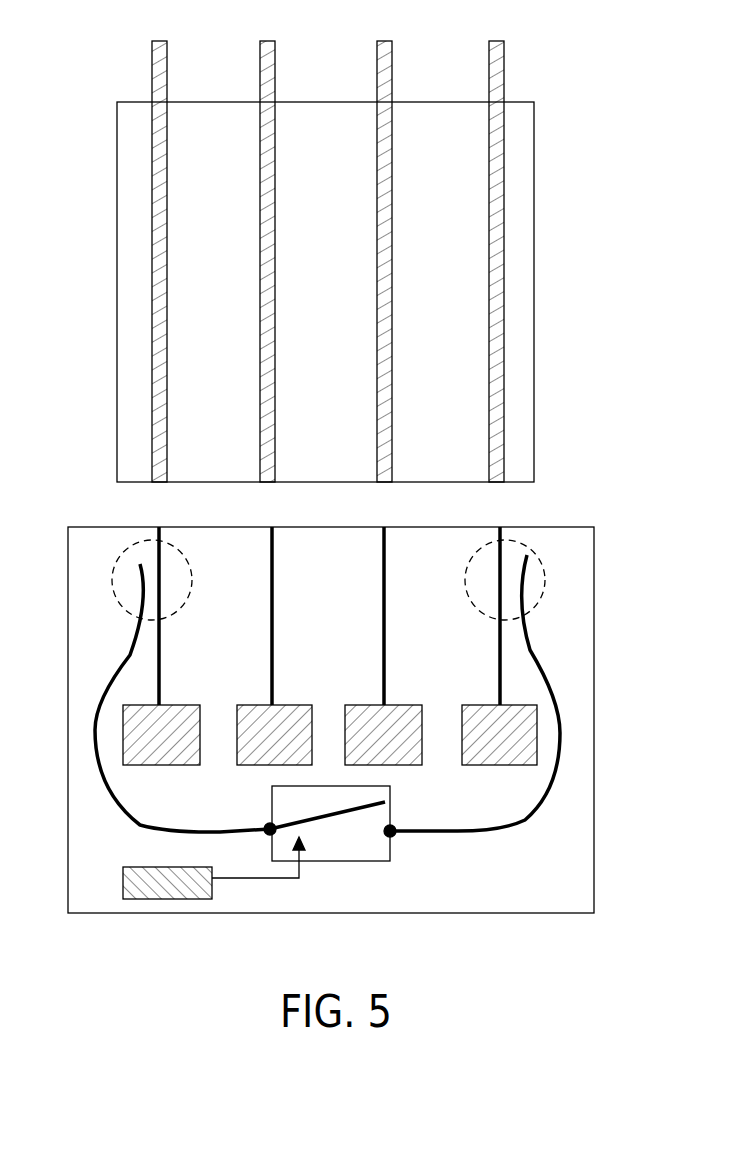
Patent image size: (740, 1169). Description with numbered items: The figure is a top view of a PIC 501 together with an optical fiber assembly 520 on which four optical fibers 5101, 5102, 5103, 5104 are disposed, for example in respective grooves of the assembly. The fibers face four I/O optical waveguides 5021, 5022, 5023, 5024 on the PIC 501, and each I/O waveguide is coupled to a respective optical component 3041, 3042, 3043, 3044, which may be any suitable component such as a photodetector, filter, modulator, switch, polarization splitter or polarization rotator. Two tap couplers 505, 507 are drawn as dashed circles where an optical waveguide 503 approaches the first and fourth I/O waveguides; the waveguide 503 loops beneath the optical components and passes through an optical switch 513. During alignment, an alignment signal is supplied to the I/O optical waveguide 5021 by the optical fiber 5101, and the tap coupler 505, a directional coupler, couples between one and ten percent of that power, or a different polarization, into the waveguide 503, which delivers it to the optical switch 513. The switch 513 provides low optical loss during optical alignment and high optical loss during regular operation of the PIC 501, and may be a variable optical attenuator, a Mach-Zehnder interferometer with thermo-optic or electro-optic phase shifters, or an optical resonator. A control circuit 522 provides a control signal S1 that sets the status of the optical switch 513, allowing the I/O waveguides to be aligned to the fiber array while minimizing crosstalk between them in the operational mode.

The optical fiber assembly 520 is at (535, 222).
The optical fiber 5101 is at (152, 47).
The optical fiber 5102 is at (260, 46).
The optical fiber 5103 is at (377, 44).
The optical fiber 5104 is at (489, 44).
The PIC 501 is at (594, 820).
The I/O optical waveguide 5021 is at (160, 682).
The I/O optical waveguide 5022 is at (272, 636).
The I/O optical waveguide 5023 is at (384, 631).
The I/O optical waveguide 5024 is at (500, 663).
The optical component 3041 is at (166, 765).
The optical component 3042 is at (260, 765).
The optical component 3043 is at (393, 765).
The optical component 3044 is at (500, 765).
The optical waveguide 503 is at (143, 821).
The tap coupler 505 is at (112, 594).
The tap coupler 507 is at (545, 568).
The optical switch 513 is at (360, 862).
The control circuit 522 is at (167, 900).
The control signal S1 is at (274, 895).